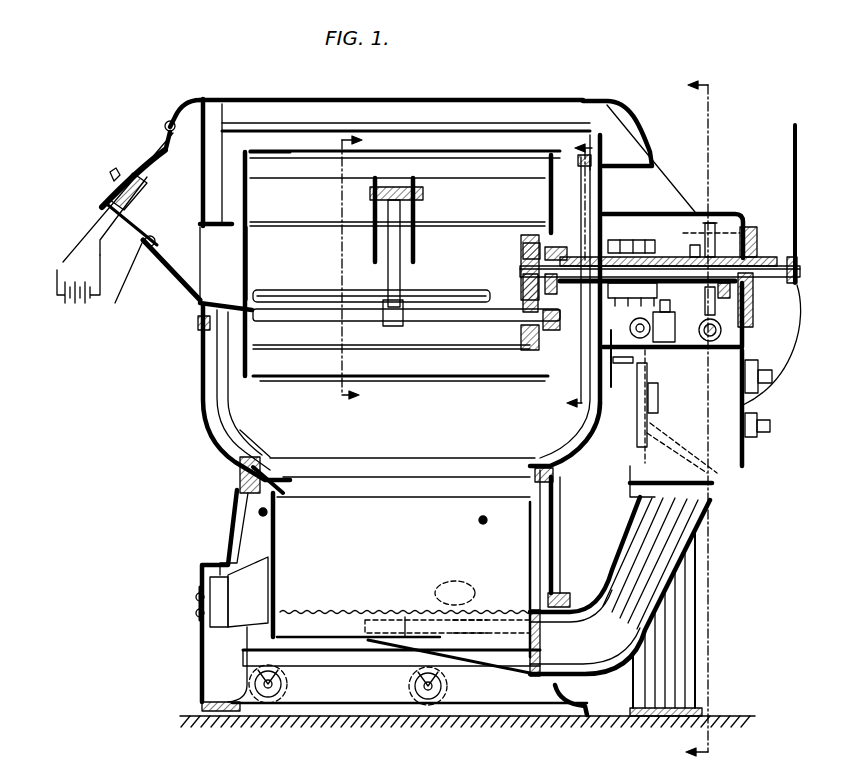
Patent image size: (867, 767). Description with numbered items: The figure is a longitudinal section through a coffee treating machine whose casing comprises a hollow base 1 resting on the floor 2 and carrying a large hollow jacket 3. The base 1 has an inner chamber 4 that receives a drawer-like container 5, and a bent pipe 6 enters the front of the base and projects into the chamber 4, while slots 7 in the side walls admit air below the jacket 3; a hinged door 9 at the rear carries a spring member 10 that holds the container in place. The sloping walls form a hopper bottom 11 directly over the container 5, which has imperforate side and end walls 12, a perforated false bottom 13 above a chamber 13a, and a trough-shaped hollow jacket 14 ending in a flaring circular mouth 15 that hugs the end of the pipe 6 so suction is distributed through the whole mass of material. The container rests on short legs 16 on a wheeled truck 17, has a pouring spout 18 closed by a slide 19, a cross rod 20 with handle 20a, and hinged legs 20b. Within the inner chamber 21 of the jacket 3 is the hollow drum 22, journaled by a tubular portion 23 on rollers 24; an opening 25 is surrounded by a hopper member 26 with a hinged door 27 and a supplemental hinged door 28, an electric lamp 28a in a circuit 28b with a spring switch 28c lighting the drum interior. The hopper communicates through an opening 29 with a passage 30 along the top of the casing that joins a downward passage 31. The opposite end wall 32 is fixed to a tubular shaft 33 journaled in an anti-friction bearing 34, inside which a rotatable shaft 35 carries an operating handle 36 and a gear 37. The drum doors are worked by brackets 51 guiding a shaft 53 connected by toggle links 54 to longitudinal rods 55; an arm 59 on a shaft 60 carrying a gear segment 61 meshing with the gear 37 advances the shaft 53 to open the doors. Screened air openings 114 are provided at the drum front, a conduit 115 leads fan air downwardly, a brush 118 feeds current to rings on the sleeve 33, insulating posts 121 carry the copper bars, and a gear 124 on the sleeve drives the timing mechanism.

The hollow base 1 is at (557, 548).
The floor 2 is at (393, 717).
The jacket 3 is at (200, 395).
The inner chamber 4 is at (540, 520).
The container 5 is at (403, 532).
The bent pipe 6 is at (597, 673).
The slots 7 is at (668, 250).
The hinged door 9 is at (217, 523).
The spring member 10 is at (202, 628).
The hopper bottom 11 is at (280, 483).
The side and end walls 12 is at (530, 562).
The false bottom 13 is at (403, 617).
The chamber 13a is at (325, 628).
The hollow jacket 14 is at (482, 667).
The circular mouth 15 is at (545, 680).
The legs 16 is at (288, 647).
The wheeled truck 17 is at (353, 668).
The pouring spout 18 is at (239, 592).
The slide 19 is at (277, 578).
The cross rod 20 is at (483, 524).
The handle 20a is at (277, 515).
The hinged legs 20b is at (457, 623).
The inner chamber 21 is at (405, 289).
The hollow drum 22 is at (437, 360).
The tubular portion 23 is at (225, 340).
The rollers 24 is at (200, 340).
The opening 25 is at (199, 275).
The hopper member 26 is at (176, 265).
The hinged door 27 is at (160, 148).
The supplemental hinged door 28 is at (117, 170).
The electric lamp 28a is at (116, 285).
The circuit 28b is at (70, 258).
The spring switch 28c is at (130, 212).
The opening 29 is at (212, 110).
The passage 30 is at (336, 116).
The passage 31 is at (630, 153).
The end wall 32 is at (568, 166).
The tubular shaft 33 is at (675, 260).
The anti-friction bearing 34 is at (748, 237).
The rotatable shaft 35 is at (772, 270).
The operating handle 36 is at (793, 143).
The gear 37 is at (523, 253).
The brackets 51 is at (417, 253).
The shaft 53 is at (370, 195).
The toggle links 54 is at (388, 255).
The longitudinal rods 55 is at (453, 291).
The arm 59 is at (405, 293).
The shaft 60 is at (447, 312).
The gear segment 61 is at (523, 340).
The air openings 114 is at (570, 280).
The conduit 115 is at (683, 620).
The brush 118 is at (610, 303).
The insulating posts 121 is at (570, 168).
The gear 124 is at (683, 252).